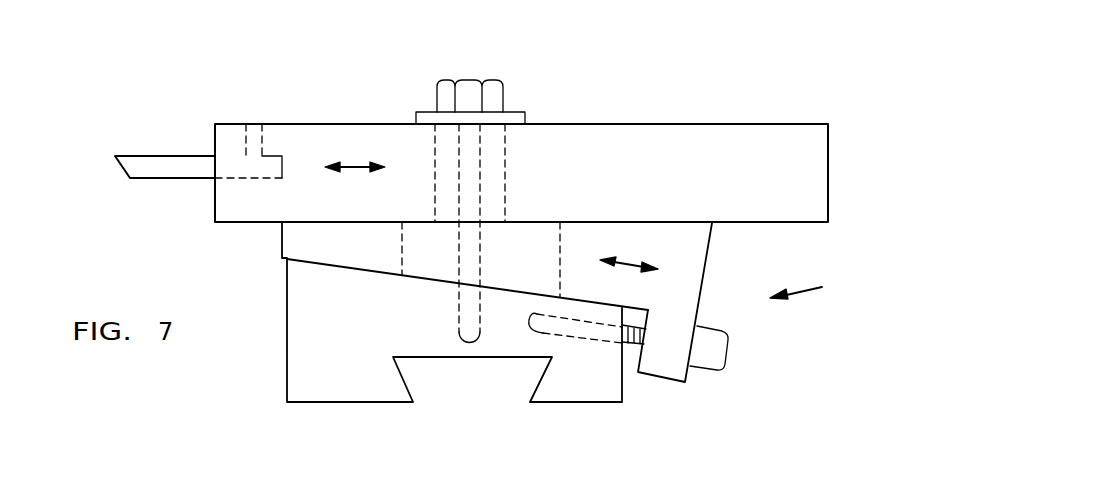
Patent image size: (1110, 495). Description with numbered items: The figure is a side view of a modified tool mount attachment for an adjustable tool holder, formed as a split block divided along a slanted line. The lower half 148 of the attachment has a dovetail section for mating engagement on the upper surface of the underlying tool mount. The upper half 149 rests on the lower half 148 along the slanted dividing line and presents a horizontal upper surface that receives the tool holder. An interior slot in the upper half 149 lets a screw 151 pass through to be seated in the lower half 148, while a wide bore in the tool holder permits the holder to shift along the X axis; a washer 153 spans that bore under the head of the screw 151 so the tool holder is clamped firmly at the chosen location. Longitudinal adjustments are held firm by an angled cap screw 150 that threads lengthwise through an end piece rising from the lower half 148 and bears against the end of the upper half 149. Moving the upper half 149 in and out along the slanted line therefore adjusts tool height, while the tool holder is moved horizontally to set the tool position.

The lower half 148 is at (287, 364).
The upper half 149 is at (688, 263).
The angled cap screw 150 is at (730, 353).
The screw 151 is at (482, 178).
The washer 153 is at (515, 112).